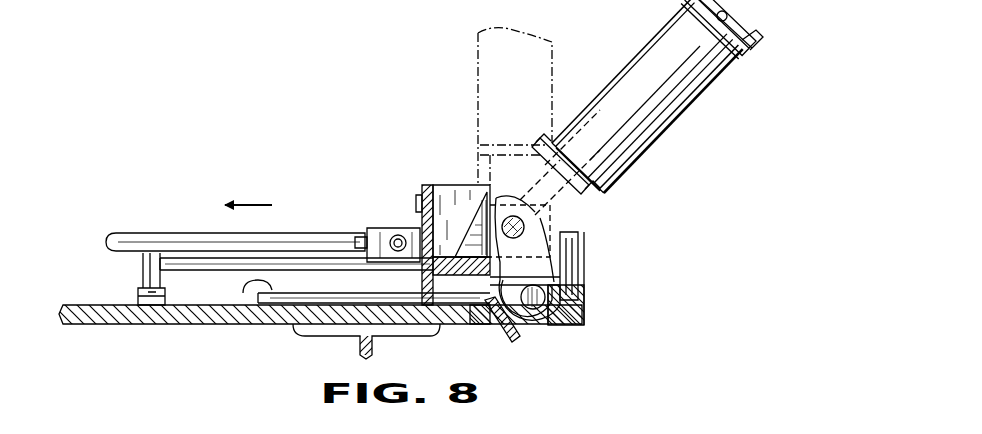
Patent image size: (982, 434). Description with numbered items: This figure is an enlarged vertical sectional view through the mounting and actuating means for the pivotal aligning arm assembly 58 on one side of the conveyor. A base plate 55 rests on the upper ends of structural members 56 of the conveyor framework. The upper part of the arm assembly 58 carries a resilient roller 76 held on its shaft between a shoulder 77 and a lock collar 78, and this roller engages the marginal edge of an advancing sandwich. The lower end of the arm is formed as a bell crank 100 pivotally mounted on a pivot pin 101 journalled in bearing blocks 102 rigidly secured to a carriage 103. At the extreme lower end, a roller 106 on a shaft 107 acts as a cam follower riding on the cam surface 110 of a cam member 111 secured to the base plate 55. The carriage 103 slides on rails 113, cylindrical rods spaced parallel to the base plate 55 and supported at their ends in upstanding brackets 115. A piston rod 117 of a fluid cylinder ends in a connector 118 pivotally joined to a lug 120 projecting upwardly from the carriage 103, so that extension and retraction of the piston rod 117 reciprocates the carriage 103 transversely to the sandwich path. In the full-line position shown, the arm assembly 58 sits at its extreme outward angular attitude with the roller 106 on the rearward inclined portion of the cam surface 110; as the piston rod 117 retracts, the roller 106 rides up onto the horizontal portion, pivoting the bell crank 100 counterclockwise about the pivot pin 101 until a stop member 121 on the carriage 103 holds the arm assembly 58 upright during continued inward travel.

The base plate 55 is at (86, 318).
The structural members 56 is at (312, 330).
The pivotal aligning arm assembly 58 is at (607, 74).
The roller 76 is at (697, 88).
The shoulder 77 is at (605, 198).
The lock collar 78 is at (738, 33).
The bell crank 100 is at (530, 185).
The pivot pin 101 is at (528, 228).
The bearing blocks 102 is at (564, 162).
The carriage 103 is at (416, 190).
The roller 106 is at (582, 318).
The shaft 107 is at (535, 306).
The cam surface 110 is at (280, 287).
The cam member 111 is at (455, 318).
The rails 113 is at (185, 258).
The upstanding brackets 115 is at (150, 265).
The piston rod 117 is at (132, 240).
The connector 118 is at (375, 236).
The lug 120 is at (418, 226).
The stop member 121 is at (467, 220).